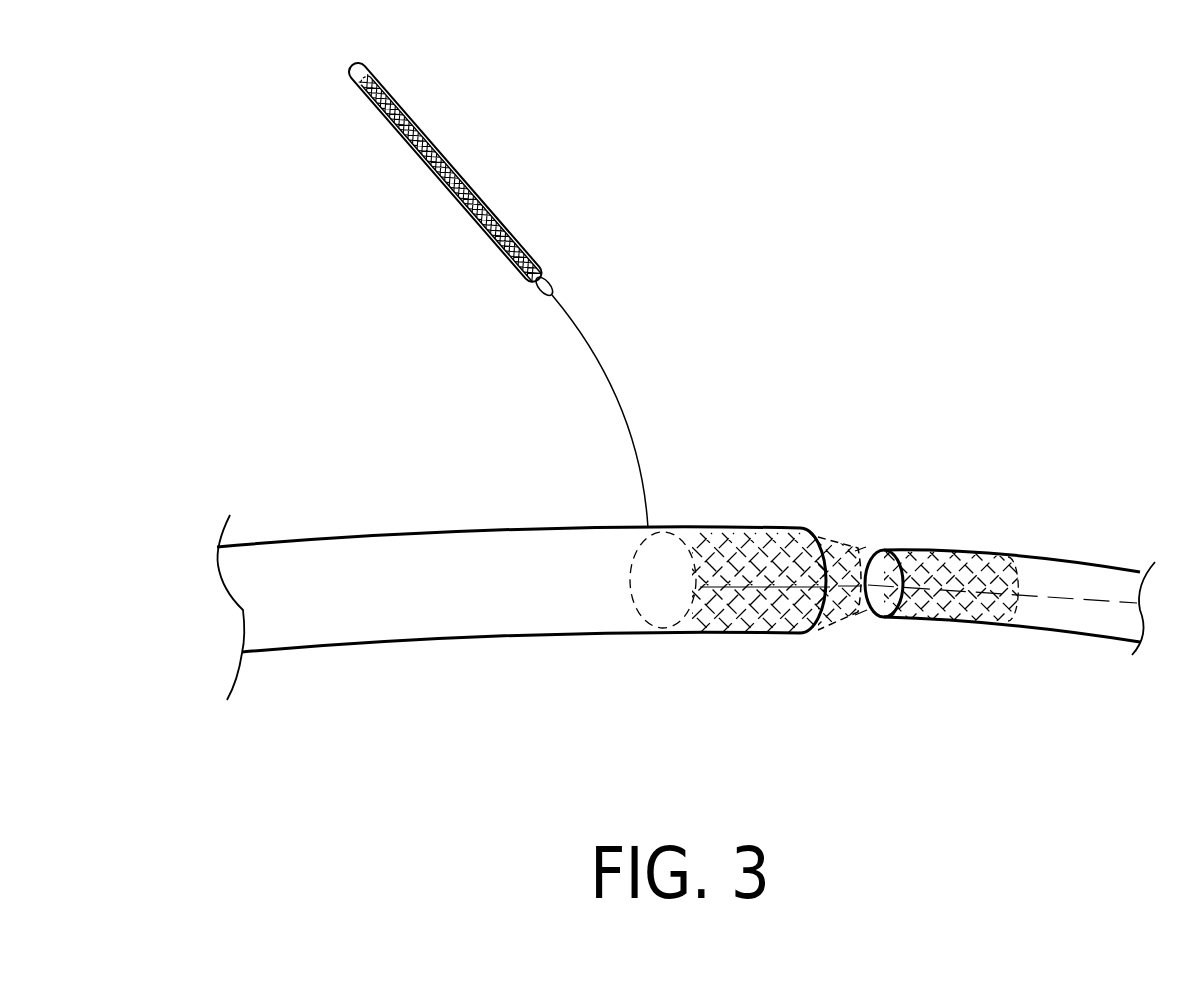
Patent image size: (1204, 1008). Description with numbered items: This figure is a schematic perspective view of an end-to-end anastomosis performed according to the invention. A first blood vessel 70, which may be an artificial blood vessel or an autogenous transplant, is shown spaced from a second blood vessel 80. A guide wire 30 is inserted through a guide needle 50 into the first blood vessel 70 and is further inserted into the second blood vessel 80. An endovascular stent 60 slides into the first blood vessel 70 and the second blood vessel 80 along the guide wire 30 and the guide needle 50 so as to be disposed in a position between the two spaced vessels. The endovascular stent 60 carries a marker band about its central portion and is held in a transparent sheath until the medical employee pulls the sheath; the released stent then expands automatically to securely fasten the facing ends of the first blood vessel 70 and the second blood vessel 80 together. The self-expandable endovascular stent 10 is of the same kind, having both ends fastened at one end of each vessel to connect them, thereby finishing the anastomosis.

The endovascular stent 10 is at (430, 137).
The guide wire 30 is at (597, 352).
The guide needle 50 is at (648, 528).
The endovascular stent 60 is at (852, 528).
The first blood vessel 70 is at (523, 618).
The second blood vessel 80 is at (1047, 575).